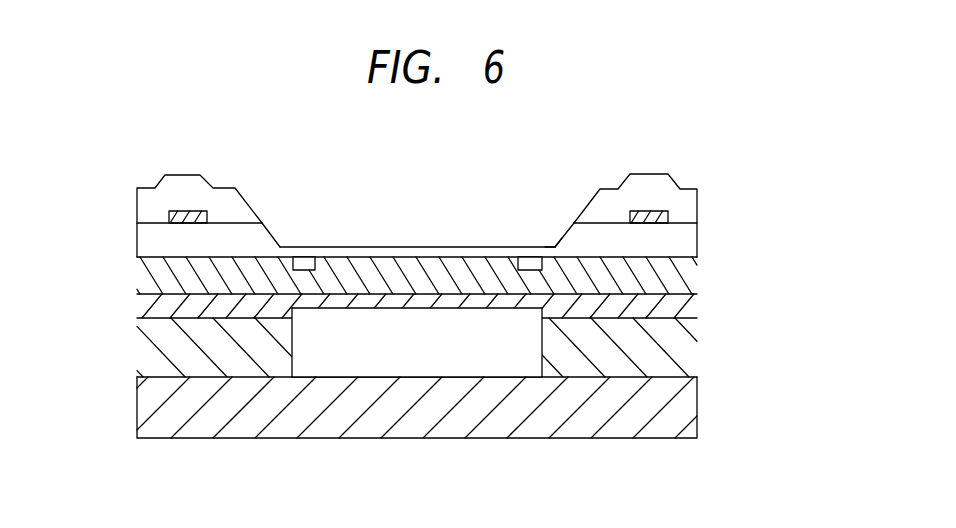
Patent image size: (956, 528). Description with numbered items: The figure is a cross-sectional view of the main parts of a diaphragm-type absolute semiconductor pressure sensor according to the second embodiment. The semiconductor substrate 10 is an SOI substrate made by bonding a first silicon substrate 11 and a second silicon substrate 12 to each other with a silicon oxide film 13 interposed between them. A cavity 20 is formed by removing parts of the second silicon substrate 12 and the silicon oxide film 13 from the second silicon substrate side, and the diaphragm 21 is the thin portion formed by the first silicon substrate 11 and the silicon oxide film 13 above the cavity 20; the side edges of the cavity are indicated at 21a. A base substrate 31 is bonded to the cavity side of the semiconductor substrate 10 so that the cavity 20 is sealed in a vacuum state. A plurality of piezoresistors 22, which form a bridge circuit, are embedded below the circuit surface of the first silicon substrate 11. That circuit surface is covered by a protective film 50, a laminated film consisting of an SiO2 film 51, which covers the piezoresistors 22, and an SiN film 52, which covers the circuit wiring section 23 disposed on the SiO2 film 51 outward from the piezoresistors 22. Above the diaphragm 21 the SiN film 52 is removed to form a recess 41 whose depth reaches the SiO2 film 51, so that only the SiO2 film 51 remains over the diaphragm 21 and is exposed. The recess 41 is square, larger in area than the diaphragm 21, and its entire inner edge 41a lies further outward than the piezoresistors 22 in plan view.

The semiconductor substrate 10 is at (475, 341).
The first silicon substrate 11 is at (688, 278).
The second silicon substrate 12 is at (688, 347).
The silicon oxide film 13 is at (688, 310).
The cavity 20 is at (432, 355).
The diaphragm 21 is at (445, 268).
The side edge of pressure generating chamber 21a is at (294, 309).
The piezoresistor 22 is at (304, 258).
The circuit wiring section 23 is at (184, 211).
The base substrate 31 is at (688, 410).
The recess 41 is at (362, 215).
The edge 41a is at (556, 245).
The protective film 50 is at (475, 187).
The SiO2 film 51 is at (688, 240).
The SiN film 52 is at (688, 207).